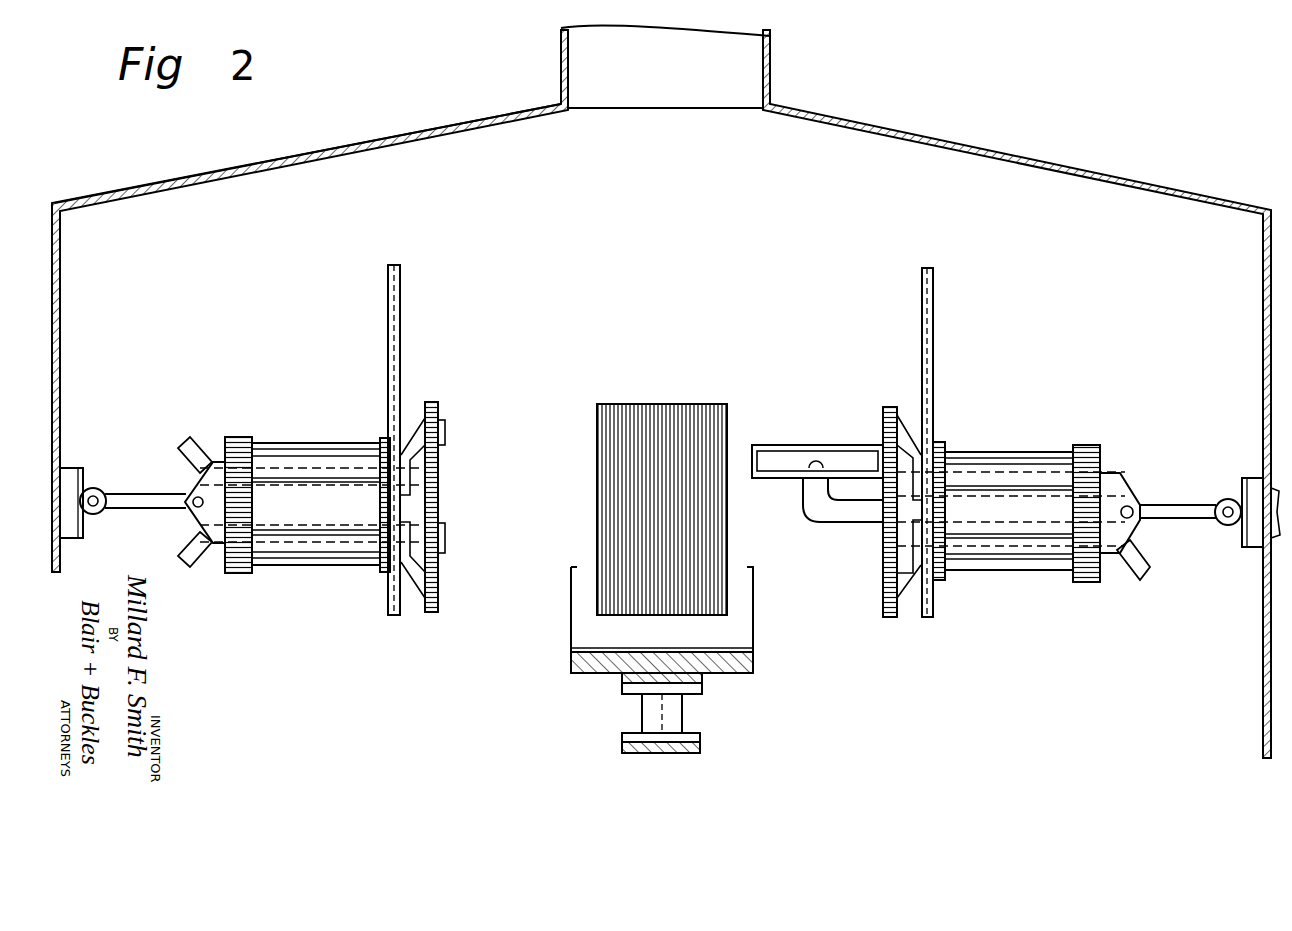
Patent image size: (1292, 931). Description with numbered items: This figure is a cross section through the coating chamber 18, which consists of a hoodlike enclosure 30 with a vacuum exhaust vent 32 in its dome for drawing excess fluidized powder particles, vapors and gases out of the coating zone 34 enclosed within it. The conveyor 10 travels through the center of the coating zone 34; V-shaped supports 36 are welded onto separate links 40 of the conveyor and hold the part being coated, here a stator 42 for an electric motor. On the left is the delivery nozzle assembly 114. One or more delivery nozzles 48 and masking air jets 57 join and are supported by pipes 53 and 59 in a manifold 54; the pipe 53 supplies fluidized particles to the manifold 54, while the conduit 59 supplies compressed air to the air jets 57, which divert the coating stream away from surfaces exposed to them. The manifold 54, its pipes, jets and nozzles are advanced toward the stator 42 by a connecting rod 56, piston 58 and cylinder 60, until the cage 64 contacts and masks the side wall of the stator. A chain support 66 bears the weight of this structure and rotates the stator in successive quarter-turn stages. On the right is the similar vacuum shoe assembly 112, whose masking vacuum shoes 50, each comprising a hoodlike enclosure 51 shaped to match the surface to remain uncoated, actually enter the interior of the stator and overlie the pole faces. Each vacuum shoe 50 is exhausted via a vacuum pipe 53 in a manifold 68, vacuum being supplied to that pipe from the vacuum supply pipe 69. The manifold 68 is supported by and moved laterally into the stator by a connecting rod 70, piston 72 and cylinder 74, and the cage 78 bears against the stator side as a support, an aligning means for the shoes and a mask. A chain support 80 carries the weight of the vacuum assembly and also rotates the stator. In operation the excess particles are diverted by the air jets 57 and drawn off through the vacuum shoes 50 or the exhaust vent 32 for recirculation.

The conveyor 10 is at (665, 760).
The coating chamber 18 is at (1032, 136).
The hoodlike enclosure 30 is at (368, 142).
The vacuum exhaust vent 32 is at (603, 58).
The coating zone 34 is at (674, 231).
The V-shaped support 36 is at (572, 662).
The conveyor link 40 is at (622, 680).
The stator 42 is at (656, 426).
The delivery nozzle 48 is at (445, 432).
The masking vacuum shoe 50 is at (817, 444).
The hoodlike enclosure 51 is at (780, 479).
The pipe 53 is at (184, 452).
The manifold 54 is at (238, 440).
The connecting rod 56 is at (136, 488).
The masking air jet 57 is at (445, 538).
The piston 58 is at (94, 488).
The conduit 59 is at (188, 556).
The cylinder 60 is at (68, 468).
The cage 64 is at (433, 406).
The chain support 66 is at (389, 300).
The manifold 68 is at (1087, 452).
The vacuum supply pipe 69 is at (1132, 562).
The connecting rod 70 is at (1165, 505).
The piston 72 is at (1232, 498).
The cylinder 74 is at (1250, 538).
The cage 78 is at (888, 408).
The chain support 80 is at (933, 306).
The vacuum shoe assembly 112 is at (984, 602).
The delivery nozzle assembly 114 is at (290, 606).